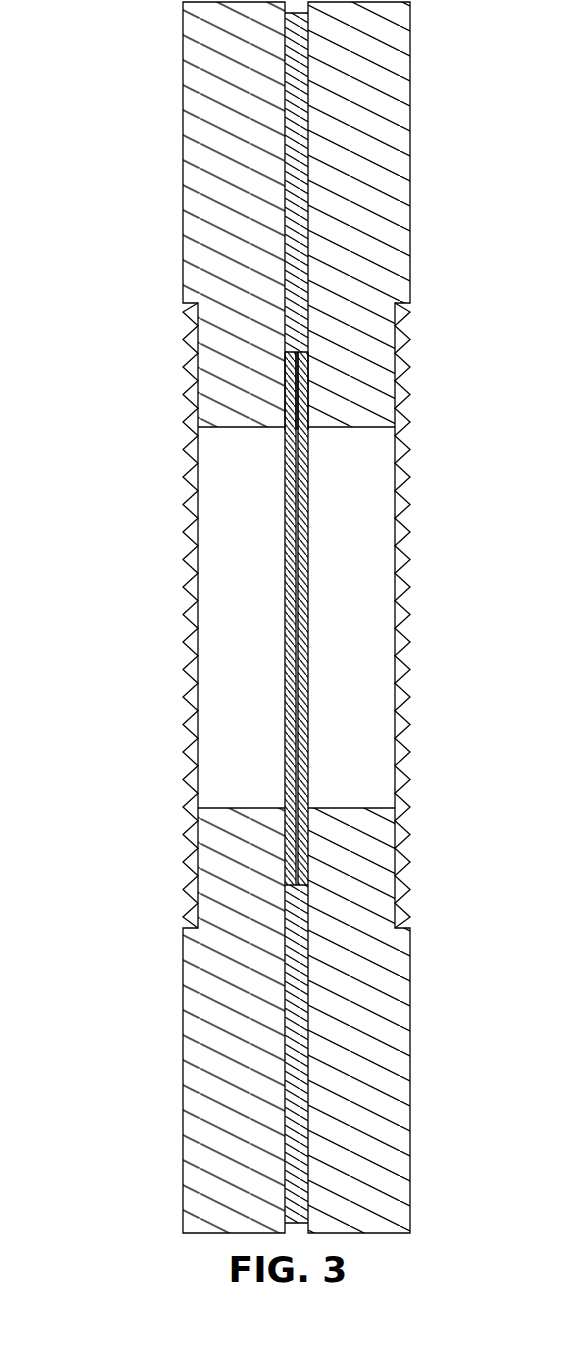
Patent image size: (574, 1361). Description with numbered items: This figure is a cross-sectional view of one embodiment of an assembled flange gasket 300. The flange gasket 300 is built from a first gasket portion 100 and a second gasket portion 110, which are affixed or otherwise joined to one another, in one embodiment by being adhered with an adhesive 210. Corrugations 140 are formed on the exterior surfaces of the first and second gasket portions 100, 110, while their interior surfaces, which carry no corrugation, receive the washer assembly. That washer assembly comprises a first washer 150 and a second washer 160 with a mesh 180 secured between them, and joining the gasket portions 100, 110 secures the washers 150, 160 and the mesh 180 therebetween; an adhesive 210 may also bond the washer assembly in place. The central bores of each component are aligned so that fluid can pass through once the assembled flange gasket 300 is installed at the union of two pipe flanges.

The flange gasket 300 is at (143, 43).
The first gasket portion 100 is at (220, 98).
The second gasket portion 110 is at (395, 145).
The adhesive 210 is at (296, 127).
The corrugations 140 is at (400, 537).
The first washer 150 is at (285, 367).
The second washer 160 is at (306, 368).
The mesh 180 is at (305, 488).